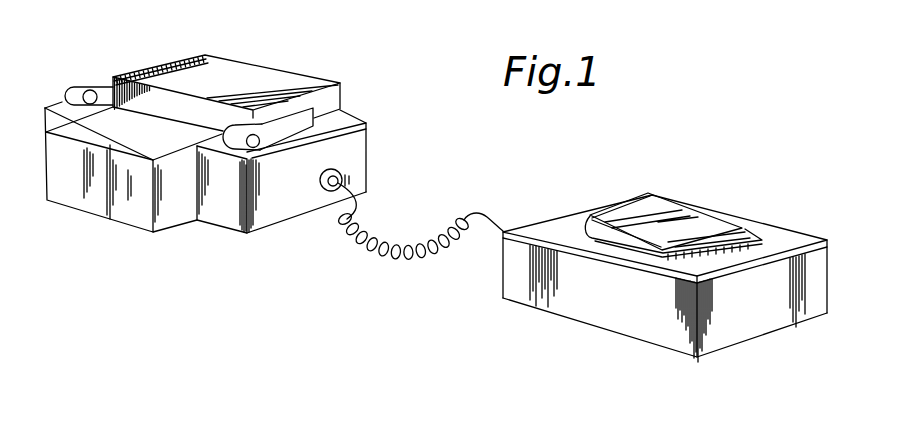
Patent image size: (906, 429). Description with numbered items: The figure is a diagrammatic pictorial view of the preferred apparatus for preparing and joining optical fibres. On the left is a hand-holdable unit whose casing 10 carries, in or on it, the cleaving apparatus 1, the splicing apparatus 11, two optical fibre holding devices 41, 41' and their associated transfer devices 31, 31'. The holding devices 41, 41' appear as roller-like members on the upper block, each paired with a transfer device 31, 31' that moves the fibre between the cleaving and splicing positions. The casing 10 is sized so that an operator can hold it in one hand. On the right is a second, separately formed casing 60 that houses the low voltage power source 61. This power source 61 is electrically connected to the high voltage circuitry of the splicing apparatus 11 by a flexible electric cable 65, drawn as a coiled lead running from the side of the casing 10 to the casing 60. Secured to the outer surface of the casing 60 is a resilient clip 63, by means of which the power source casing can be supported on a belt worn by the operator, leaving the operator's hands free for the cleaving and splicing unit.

The cleaving apparatus 1 is at (113, 221).
The casing 10 is at (300, 200).
The splicing apparatus 11 is at (270, 225).
The transfer device 31 is at (76, 68).
The transfer device 31' is at (226, 203).
The optical fibre holding device 41 is at (219, 70).
The optical fibre holding device 41' is at (338, 115).
The flexible electric cable 65 is at (402, 242).
The casing 60 is at (600, 310).
The low voltage power source 61 is at (745, 340).
The resilient clip 63 is at (660, 212).